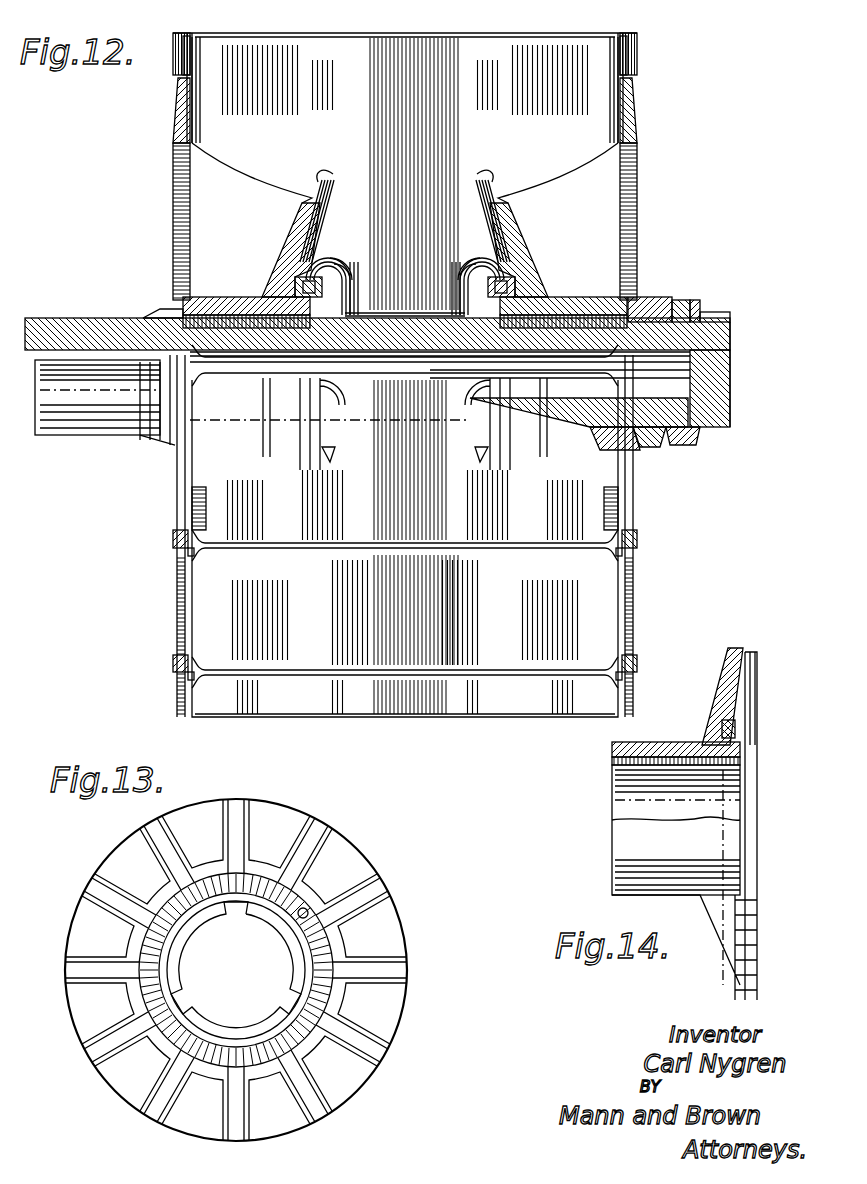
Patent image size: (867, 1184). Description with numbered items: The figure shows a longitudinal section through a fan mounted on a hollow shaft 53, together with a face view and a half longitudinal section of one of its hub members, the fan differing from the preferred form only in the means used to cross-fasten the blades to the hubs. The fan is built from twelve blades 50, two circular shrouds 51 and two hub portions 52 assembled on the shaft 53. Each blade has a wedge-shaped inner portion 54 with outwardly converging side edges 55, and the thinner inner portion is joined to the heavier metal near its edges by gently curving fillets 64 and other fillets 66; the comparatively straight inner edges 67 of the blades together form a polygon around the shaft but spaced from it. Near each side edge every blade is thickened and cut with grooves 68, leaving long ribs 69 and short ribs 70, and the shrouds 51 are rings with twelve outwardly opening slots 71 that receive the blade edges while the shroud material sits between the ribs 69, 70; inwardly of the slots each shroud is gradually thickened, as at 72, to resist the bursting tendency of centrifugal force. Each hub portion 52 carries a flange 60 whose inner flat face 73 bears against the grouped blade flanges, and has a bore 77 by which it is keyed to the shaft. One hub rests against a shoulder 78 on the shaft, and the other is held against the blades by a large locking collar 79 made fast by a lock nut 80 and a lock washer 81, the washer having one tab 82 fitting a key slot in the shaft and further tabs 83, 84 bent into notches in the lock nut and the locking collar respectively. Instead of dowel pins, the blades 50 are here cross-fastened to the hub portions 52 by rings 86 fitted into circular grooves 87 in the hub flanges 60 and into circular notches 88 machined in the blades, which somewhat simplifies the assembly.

In FIG. 12, the blades 50 is at (480, 42).
In FIG. 12, the circular shroud 51 is at (182, 190).
In FIG. 12, the hub portion 52 is at (578, 295).
In FIG. 13, the hub portion 52 is at (411, 904).
In FIG. 14, the hub portion 52 is at (697, 716).
In FIG. 12, the hollow shaft 53 is at (100, 316).
In FIG. 12, the inner portion 54 is at (450, 291).
In FIG. 12, the side edges 55 is at (190, 45).
In FIG. 12, the flange 60 is at (300, 212).
In FIG. 13, the flange 60 is at (275, 822).
In FIG. 14, the flange 60 is at (732, 657).
In FIG. 12, the fillets 64 is at (332, 186).
In FIG. 12, the fillets 66 is at (350, 293).
In FIG. 12, the inner edges 67 is at (452, 314).
In FIG. 12, the grooves 68 is at (180, 62).
In FIG. 12, the ribs 69 is at (200, 110).
In FIG. 12, the ribs 70 is at (178, 33).
In FIG. 12, the slots 71 is at (196, 88).
In FIG. 12, the thickened portion 72 is at (176, 123).
In FIG. 13, the inner flat face 73 is at (282, 878).
In FIG. 13, the bore 77 is at (240, 1022).
In FIG. 14, the bore 77 is at (612, 787).
In FIG. 12, the shoulder 78 is at (165, 308).
In FIG. 12, the locking collar 79 is at (650, 297).
In FIG. 12, the lock nut 80 is at (700, 316).
In FIG. 12, the lock washer 81 is at (680, 300).
In FIG. 12, the tab 82 is at (672, 420).
In FIG. 12, the tab 83 is at (695, 300).
In FIG. 12, the tab 84 is at (660, 450).
In FIG. 12, the rings 86 is at (295, 290).
In FIG. 12, the circular grooves 87 is at (303, 283).
In FIG. 13, the circular grooves 87 is at (308, 910).
In FIG. 14, the circular grooves 87 is at (722, 728).
In FIG. 12, the circular notches 88 is at (340, 278).